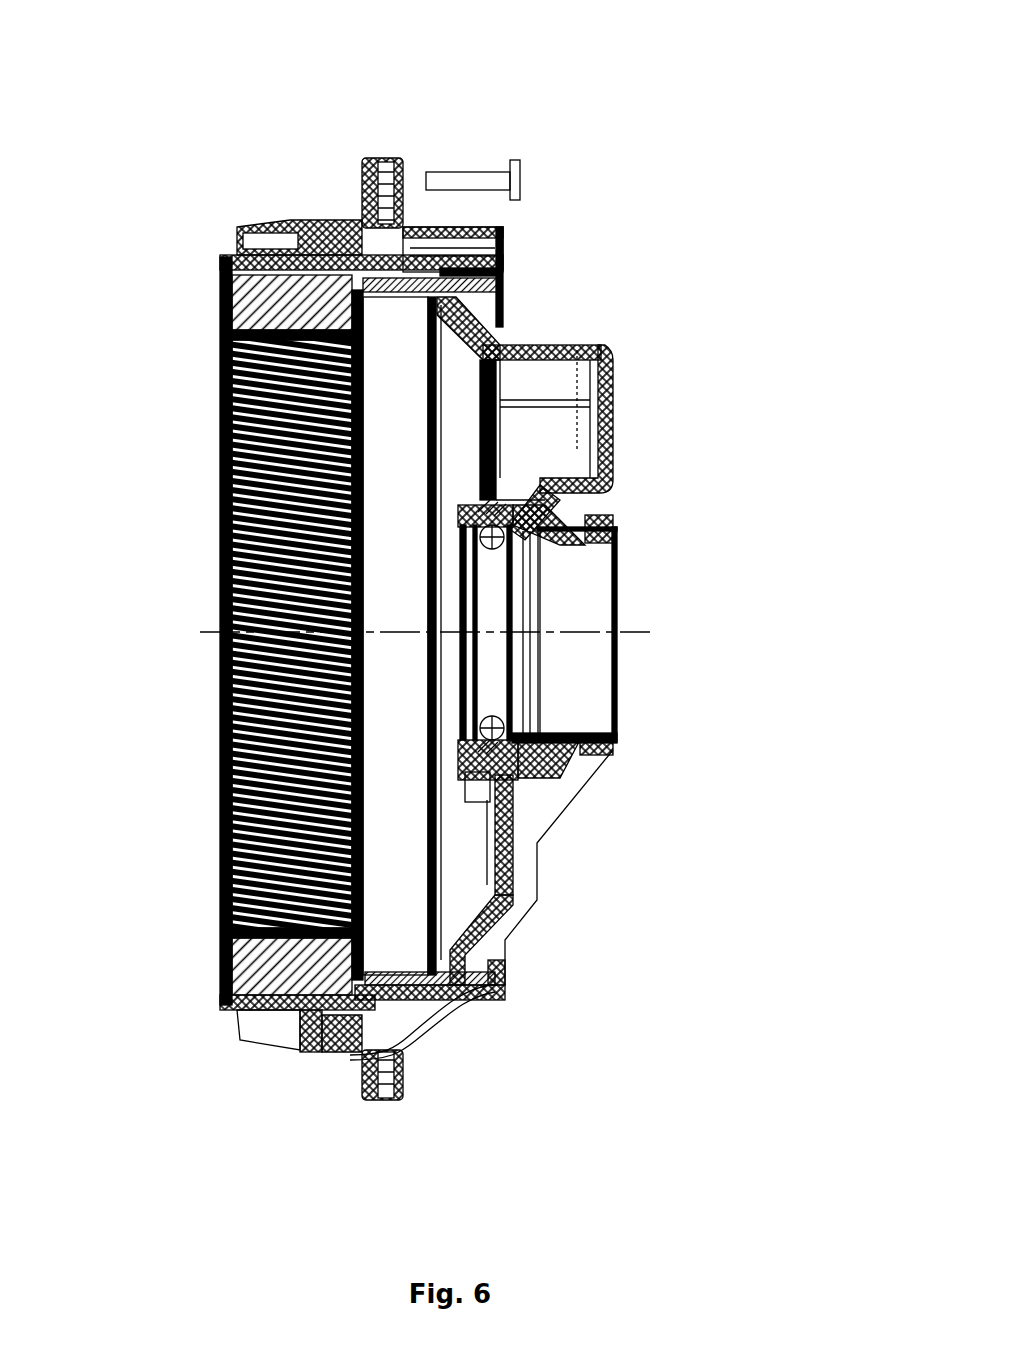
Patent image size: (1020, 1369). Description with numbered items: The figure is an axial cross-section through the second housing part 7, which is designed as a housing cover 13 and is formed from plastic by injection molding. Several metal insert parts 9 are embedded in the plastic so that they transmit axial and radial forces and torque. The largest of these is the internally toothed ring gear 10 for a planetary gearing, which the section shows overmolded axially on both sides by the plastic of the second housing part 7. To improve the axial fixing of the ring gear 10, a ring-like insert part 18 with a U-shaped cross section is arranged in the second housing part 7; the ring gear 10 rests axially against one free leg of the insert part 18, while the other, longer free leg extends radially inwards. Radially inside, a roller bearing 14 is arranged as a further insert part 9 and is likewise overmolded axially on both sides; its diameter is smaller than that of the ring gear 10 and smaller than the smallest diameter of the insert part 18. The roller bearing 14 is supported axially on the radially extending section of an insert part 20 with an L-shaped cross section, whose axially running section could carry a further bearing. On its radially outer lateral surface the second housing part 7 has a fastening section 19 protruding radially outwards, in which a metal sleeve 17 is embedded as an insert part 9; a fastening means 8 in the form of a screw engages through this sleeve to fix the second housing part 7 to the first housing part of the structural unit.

The fastening section 19 is at (390, 118).
The insert part 9 is at (435, 624).
The metal sleeve 17 is at (378, 160).
The fastening means 8 is at (478, 180).
The second housing part 7 is at (545, 567).
The housing cover 13 is at (545, 285).
The internally toothed ring gear 10 is at (255, 295).
The L-shaped insert part 20 is at (527, 540).
The roller bearing 14 is at (508, 567).
The U-shaped insert part 18 is at (420, 1005).